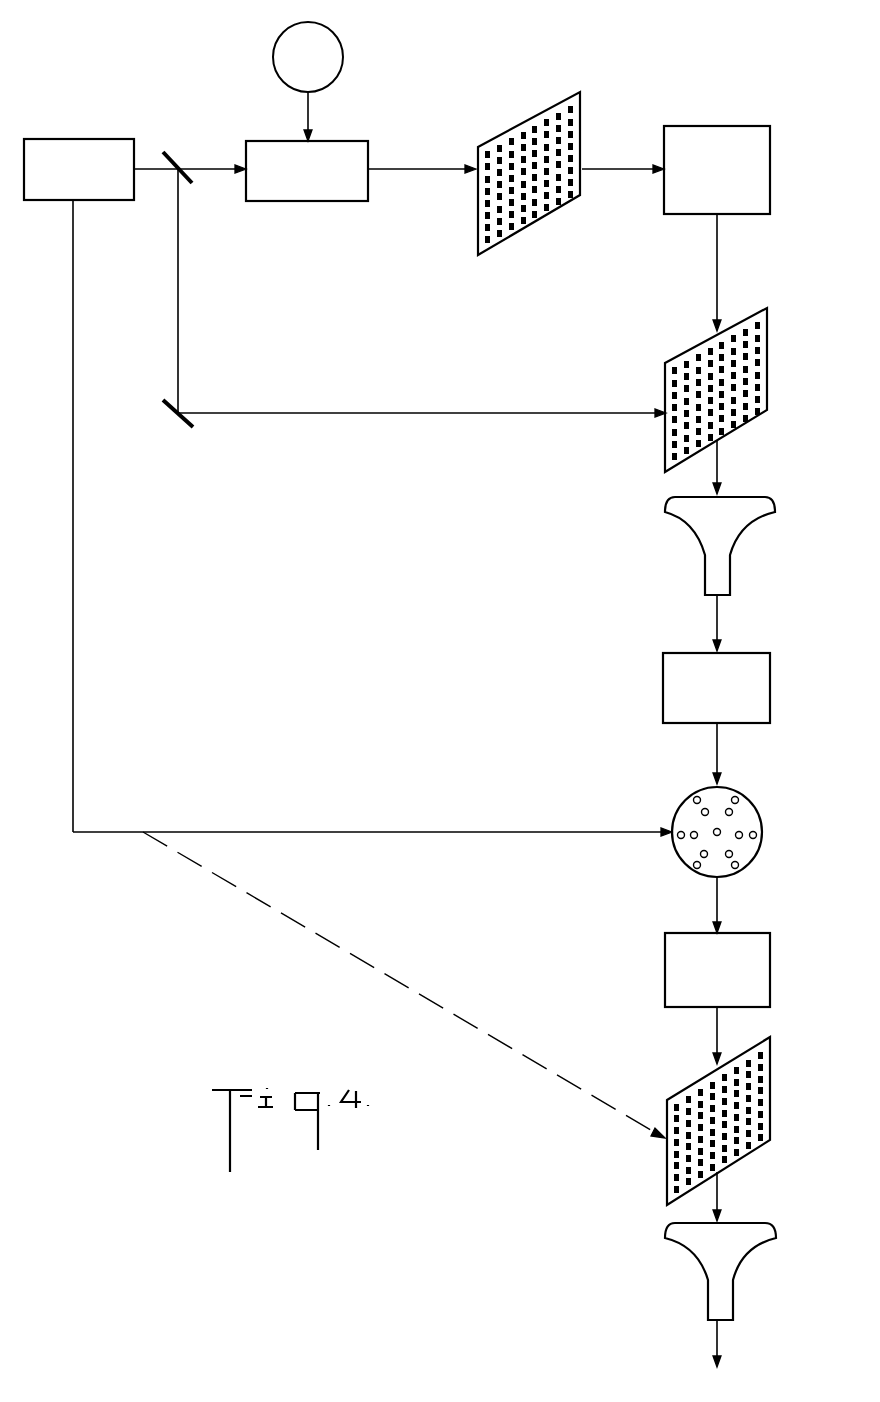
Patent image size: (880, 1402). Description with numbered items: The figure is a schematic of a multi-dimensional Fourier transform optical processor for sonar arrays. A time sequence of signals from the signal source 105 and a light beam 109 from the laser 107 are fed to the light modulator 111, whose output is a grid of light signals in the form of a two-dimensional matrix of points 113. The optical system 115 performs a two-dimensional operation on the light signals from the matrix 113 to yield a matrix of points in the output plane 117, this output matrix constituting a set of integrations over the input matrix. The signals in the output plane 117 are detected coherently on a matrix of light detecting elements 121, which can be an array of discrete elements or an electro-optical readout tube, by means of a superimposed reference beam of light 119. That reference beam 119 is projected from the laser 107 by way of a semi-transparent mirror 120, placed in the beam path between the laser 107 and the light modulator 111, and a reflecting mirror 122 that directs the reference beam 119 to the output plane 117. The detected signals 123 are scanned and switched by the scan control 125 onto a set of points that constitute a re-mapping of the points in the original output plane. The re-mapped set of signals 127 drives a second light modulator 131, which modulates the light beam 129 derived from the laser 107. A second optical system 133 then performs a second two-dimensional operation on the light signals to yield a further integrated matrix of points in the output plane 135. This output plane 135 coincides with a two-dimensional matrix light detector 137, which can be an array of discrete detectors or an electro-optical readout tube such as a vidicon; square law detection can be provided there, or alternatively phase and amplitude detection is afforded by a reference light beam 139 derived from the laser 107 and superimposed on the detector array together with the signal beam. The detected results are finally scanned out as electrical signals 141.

The signal source 105 is at (333, 84).
The laser 107 is at (115, 200).
The light beam 109 is at (209, 165).
The light modulator 111 is at (315, 202).
The two-dimensional matrix of points 113 is at (507, 235).
The optical system 115 is at (733, 125).
The output plane 117 is at (768, 330).
The reference beam of light 119 is at (322, 418).
The semi-transparent mirror 120 is at (190, 185).
The matrix of light detecting elements 121 is at (662, 513).
The reflecting mirror 122 is at (193, 430).
The detected signals 123 is at (715, 620).
The scan control 125 is at (663, 678).
The re-mapped set of signals 127 is at (760, 808).
The light beam 129 is at (372, 830).
The light modulator 131 is at (780, 845).
The optical system 133 is at (765, 953).
The output plane 135 is at (673, 1092).
The two-dimensional matrix light detector 137 is at (665, 1232).
The reference light beam 139 is at (435, 1003).
The electrical signals 141 is at (715, 1337).